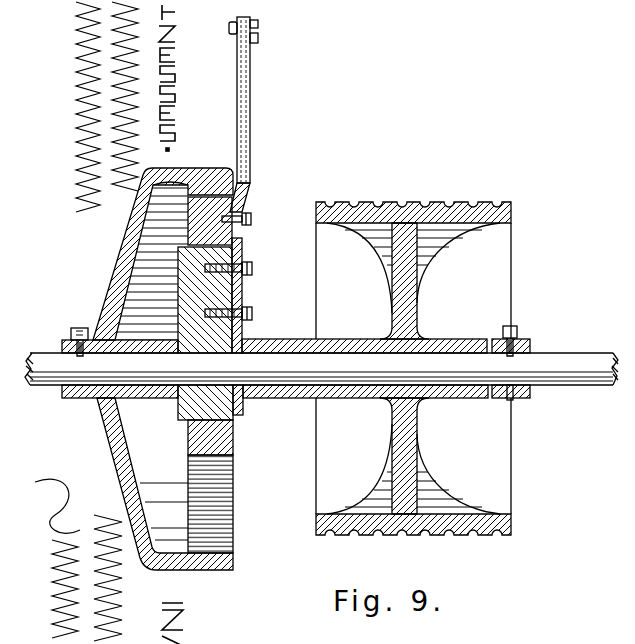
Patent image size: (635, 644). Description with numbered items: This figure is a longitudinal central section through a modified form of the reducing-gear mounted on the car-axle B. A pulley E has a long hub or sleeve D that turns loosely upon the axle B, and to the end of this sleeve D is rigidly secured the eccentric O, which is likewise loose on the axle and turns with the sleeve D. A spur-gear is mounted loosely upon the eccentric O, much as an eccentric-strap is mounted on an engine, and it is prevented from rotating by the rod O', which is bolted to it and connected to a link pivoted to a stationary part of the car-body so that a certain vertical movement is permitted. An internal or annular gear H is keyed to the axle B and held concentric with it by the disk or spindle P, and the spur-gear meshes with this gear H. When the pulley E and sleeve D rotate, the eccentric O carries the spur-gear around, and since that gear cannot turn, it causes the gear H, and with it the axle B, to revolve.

The car-axle B is at (321, 369).
The disk or spindle P is at (121, 463).
The internal or annular gear H is at (228, 522).
The eccentric O is at (227, 308).
The rod O' is at (250, 121).
The hub or sleeve D is at (268, 405).
The pulley E is at (449, 202).